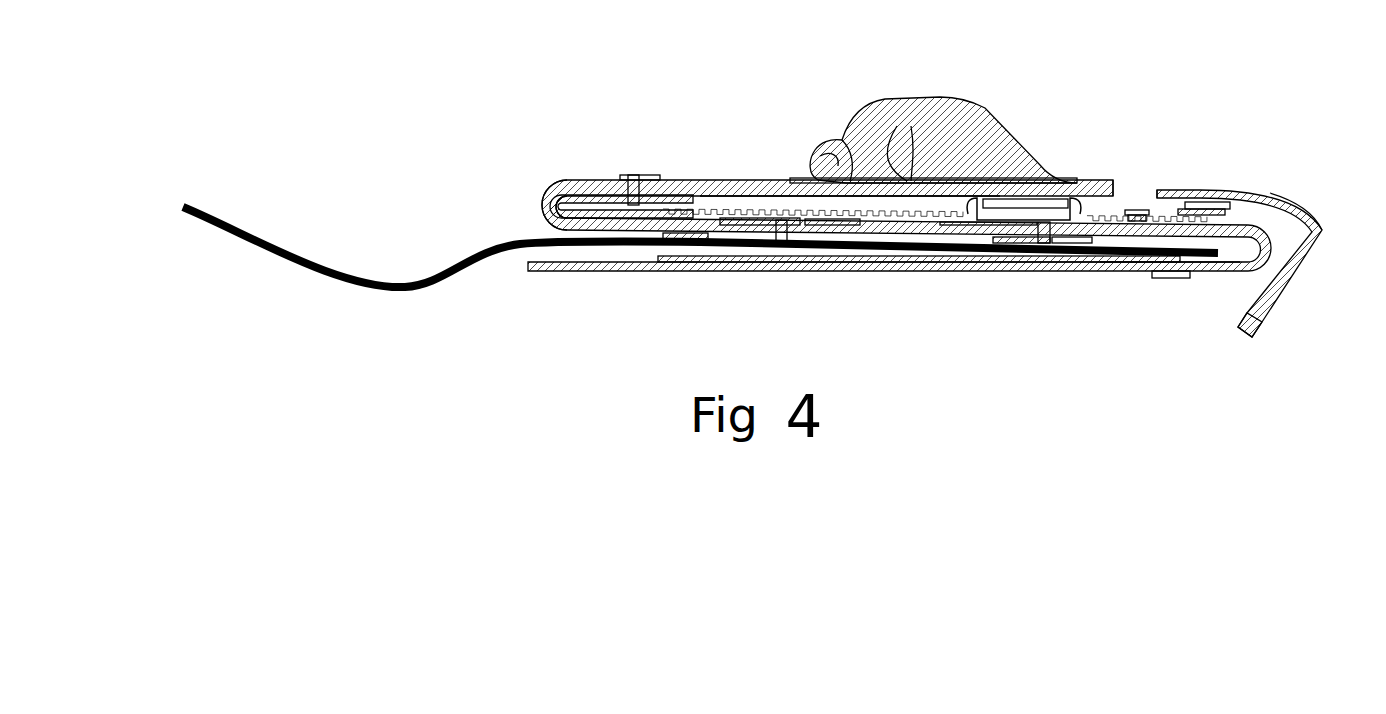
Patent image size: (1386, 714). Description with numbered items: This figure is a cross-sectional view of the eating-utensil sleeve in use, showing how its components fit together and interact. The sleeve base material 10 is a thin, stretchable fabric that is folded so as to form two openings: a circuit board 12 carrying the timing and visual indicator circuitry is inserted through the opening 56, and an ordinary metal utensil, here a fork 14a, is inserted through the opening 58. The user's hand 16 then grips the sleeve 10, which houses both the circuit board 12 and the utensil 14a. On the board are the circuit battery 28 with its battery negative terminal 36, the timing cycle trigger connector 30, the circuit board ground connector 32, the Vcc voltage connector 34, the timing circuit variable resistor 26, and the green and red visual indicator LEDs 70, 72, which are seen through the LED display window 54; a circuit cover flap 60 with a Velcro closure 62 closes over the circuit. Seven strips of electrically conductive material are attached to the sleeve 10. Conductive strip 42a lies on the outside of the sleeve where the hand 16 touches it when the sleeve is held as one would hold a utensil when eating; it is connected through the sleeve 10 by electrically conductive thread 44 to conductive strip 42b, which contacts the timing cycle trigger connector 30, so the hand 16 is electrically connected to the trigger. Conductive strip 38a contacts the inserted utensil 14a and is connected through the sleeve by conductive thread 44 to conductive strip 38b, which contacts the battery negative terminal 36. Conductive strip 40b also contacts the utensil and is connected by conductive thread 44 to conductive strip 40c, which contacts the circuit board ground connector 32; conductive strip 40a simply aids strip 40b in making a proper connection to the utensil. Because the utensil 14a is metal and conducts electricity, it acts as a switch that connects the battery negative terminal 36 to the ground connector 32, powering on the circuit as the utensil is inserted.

The sleeve base material 10 is at (586, 186).
The circuit board 12 is at (728, 196).
The utensil (fork) 14a is at (380, 290).
The user's hand 16 is at (952, 125).
The timing circuit variable resistor 26 is at (1207, 208).
The circuit battery 28 is at (1033, 200).
The timing cycle trigger connector 30 is at (655, 196).
The circuit board ground connector 32 is at (768, 235).
The circuit board Vcc voltage connector 34 is at (1087, 224).
The battery negative terminal 36 is at (968, 215).
The conductive material connecting utensil to battery negative terminal, utensil sid 38a is at (1137, 263).
The conductive material connecting utensil to battery negative terminal, circuit boa 38b is at (1002, 228).
The conductive material connecting utensil to circuit ground, lower utensil side 40a is at (733, 262).
The conductive material connecting utensil to circuit ground, upper utensil side 40b is at (705, 247).
The conductive material connecting utensil to circuit ground, circuit board side 40c is at (818, 225).
The conductive material connecting user's hand to timing cycle trigger connector, ha 42a is at (757, 196).
The conductive material connecting user's hand to timing cycle trigger connector, ci 42b is at (570, 193).
The conductive thread 44 is at (634, 176).
The LED display window 54 is at (1125, 190).
The opening in sleeve where circuit board is inserted 56 is at (1243, 216).
The opening in sleeve where utensil is inserted 58 is at (540, 229).
The circuit cover flap 60 is at (1310, 270).
The Velcro closure 62 is at (1248, 312).
The green visual indicator LED 70 is at (1133, 209).
The red visual indicator LED 72 is at (1140, 209).